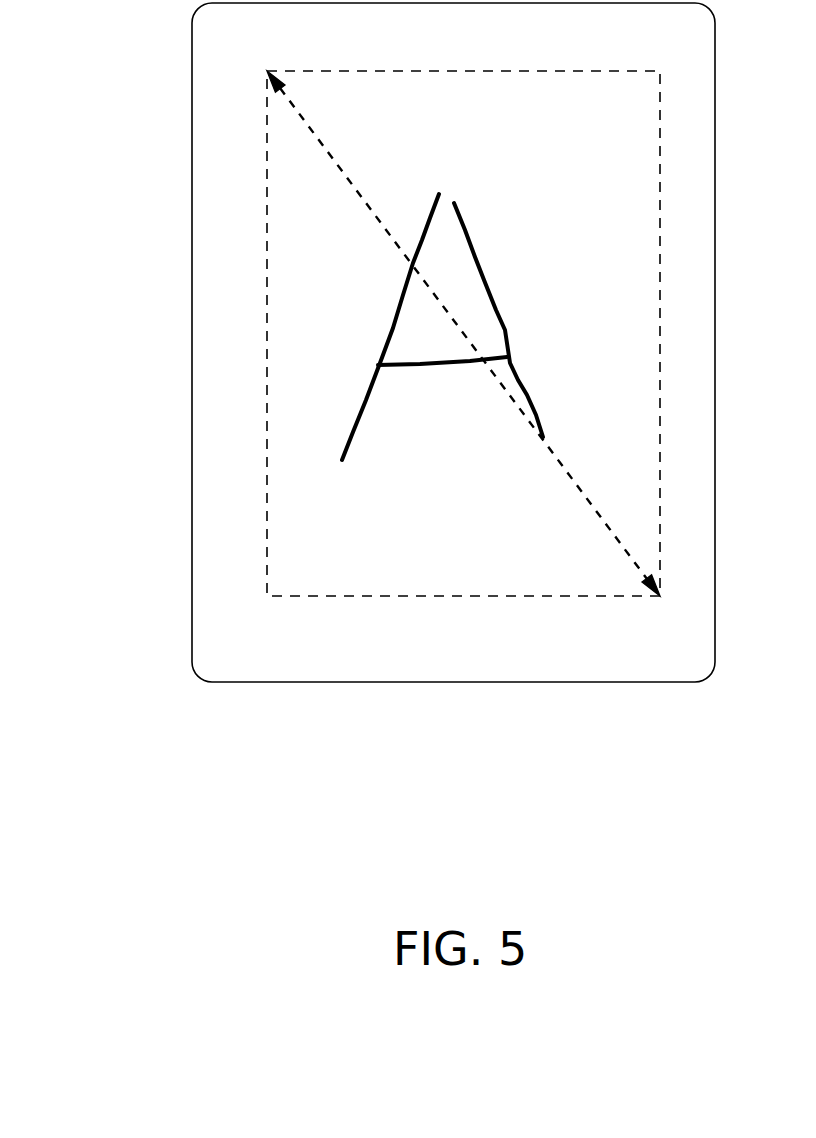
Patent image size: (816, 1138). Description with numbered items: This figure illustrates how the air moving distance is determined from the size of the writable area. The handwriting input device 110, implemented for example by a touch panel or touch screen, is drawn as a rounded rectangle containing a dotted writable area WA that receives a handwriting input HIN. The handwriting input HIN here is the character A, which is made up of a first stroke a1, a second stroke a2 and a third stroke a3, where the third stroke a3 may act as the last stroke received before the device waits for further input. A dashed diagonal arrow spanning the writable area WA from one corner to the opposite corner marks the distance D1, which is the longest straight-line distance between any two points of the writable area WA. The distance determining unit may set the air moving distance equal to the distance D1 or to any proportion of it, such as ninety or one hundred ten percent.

The handwriting input device 110 is at (192, 343).
The writable area WA is at (285, 450).
The distance D1 is at (463, 333).
The handwriting input HIN is at (442, 289).
The first stroke a1 is at (392, 328).
The second stroke a2 is at (484, 278).
The third stroke a3 is at (422, 366).